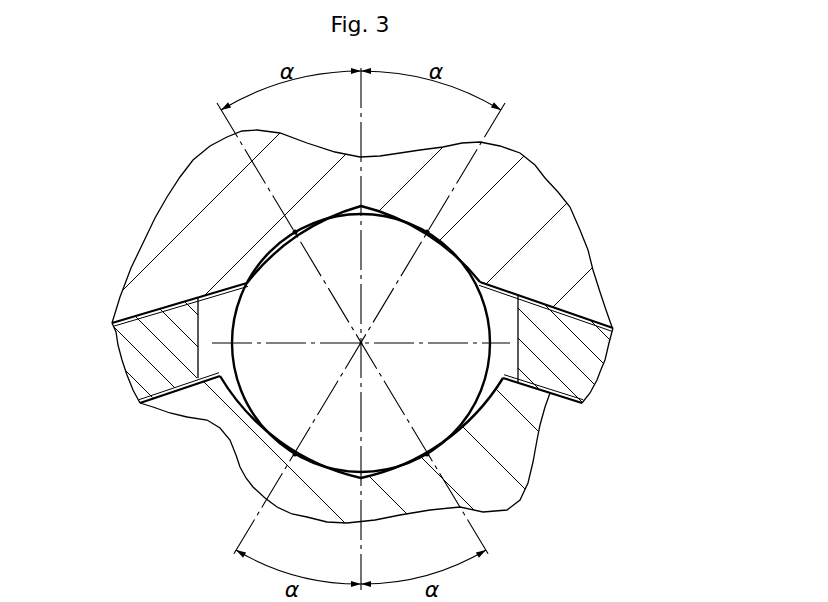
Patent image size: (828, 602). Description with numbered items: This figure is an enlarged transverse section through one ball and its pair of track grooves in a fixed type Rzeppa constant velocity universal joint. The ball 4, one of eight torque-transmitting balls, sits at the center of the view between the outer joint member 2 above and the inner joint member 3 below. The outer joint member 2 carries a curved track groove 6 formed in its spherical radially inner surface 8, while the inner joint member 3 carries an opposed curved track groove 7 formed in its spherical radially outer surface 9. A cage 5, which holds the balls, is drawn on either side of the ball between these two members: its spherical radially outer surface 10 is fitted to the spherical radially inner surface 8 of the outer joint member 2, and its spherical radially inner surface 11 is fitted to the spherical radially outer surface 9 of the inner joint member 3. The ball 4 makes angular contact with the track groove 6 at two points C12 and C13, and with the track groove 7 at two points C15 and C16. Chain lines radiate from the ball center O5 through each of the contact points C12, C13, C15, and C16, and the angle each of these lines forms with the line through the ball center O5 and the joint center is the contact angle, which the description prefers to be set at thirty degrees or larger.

The outer joint member 2 is at (192, 192).
The inner joint member 3 is at (512, 448).
The ball 4 is at (267, 379).
The cage 5 is at (577, 337).
The track groove 6 is at (348, 214).
The track groove 7 is at (349, 470).
The spherical radially inner surface 8 is at (115, 335).
The spherical radially outer surface 9 is at (165, 397).
The spherical radially outer surface 10 is at (548, 299).
The spherical radially inner surface 11 is at (558, 398).
The ball center O5 is at (362, 343).
The contact point C12 is at (427, 234).
The contact point C13 is at (295, 234).
The contact point C15 is at (426, 452).
The contact point C16 is at (295, 452).